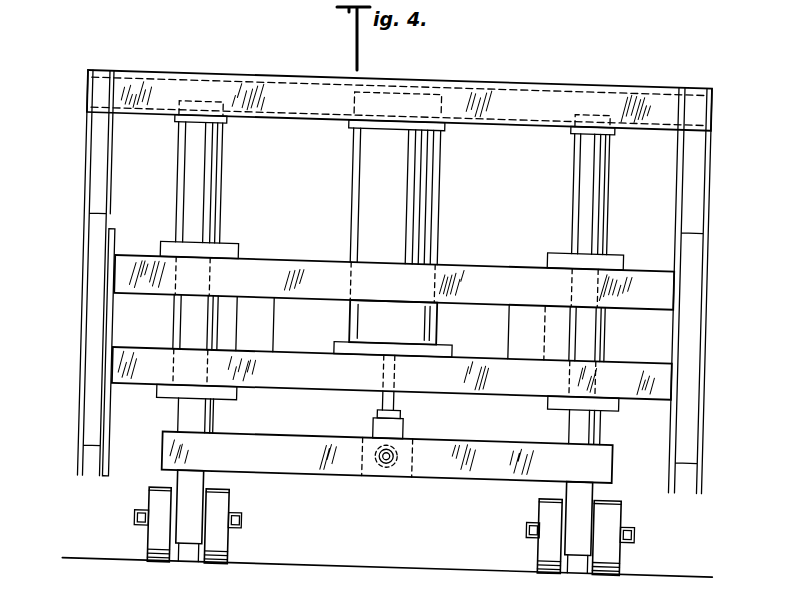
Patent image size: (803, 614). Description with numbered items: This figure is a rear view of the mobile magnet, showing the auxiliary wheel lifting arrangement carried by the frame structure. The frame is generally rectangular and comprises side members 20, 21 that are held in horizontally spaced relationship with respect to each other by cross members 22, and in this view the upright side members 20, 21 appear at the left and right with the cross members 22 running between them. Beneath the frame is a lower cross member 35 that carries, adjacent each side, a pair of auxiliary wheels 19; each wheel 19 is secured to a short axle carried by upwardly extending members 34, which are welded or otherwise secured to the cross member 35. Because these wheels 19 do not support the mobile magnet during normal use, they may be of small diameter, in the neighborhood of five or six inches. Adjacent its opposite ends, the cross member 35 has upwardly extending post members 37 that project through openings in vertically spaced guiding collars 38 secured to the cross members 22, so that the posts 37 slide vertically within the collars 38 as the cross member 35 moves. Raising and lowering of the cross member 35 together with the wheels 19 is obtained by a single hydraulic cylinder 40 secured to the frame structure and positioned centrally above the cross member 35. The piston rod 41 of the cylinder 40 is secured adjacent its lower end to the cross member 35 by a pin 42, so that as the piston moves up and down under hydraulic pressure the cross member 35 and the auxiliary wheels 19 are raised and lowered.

The auxiliary wheels 19 is at (178, 561).
The side member 20 is at (694, 327).
The side member 21 is at (99, 283).
The cross members 22 is at (286, 82).
The upwardly extending members 34 is at (599, 478).
The cross member 35 is at (495, 454).
The post members 37 is at (195, 169).
The guiding collars 38 is at (230, 243).
The hydraulic cylinder 40 is at (428, 170).
The piston rod 41 is at (407, 398).
The pin 42 is at (394, 458).